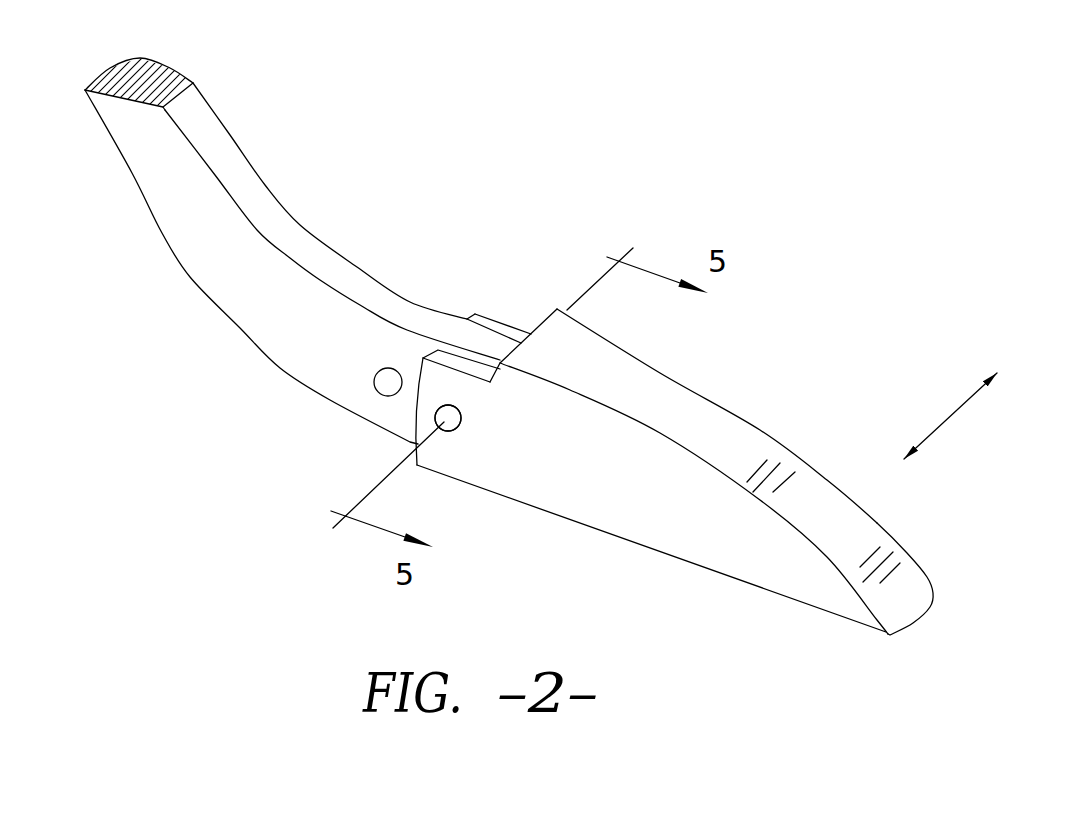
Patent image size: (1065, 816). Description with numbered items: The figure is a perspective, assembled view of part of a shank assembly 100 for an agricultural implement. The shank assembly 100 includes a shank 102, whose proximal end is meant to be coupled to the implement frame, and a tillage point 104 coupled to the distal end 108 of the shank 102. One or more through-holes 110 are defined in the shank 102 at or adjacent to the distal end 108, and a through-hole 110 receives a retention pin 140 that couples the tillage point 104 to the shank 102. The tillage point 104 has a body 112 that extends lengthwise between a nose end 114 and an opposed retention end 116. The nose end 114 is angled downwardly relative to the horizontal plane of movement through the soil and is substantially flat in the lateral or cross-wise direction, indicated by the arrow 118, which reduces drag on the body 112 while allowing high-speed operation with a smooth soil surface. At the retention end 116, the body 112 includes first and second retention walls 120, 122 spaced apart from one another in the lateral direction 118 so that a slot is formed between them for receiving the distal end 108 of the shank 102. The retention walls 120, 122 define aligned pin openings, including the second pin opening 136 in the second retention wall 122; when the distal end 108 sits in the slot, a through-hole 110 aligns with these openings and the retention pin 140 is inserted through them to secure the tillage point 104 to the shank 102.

The shank assembly 100 is at (827, 202).
The shank 102 is at (192, 218).
The tillage point 104 is at (794, 401).
The distal end 108 is at (305, 363).
The through-hole 110 is at (375, 384).
The body 112 is at (664, 395).
The nose end 114 is at (946, 620).
The retention end 116 is at (462, 312).
The lateral direction 118 is at (956, 415).
The first retention wall 120 is at (509, 326).
The second retention wall 122 is at (445, 458).
The second pin opening 136 is at (462, 413).
The retention pin 140 is at (436, 413).